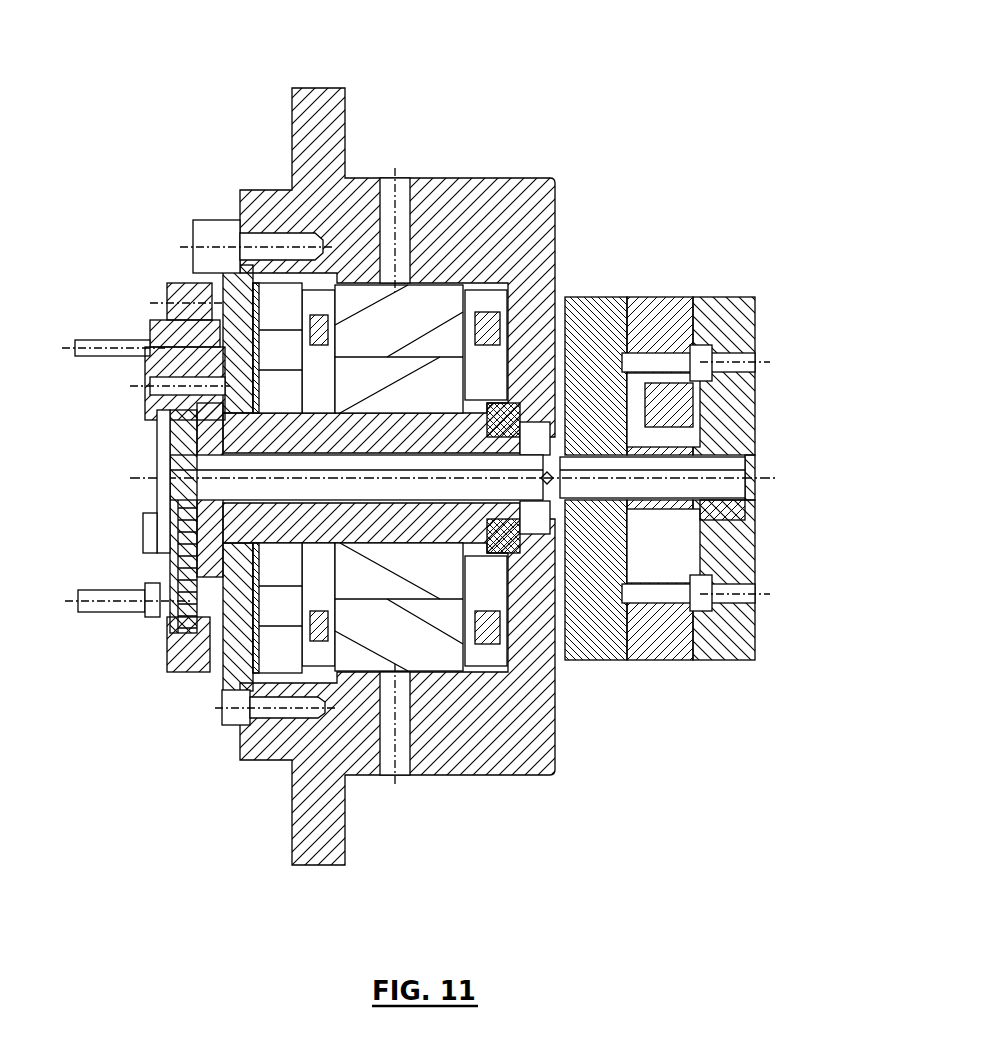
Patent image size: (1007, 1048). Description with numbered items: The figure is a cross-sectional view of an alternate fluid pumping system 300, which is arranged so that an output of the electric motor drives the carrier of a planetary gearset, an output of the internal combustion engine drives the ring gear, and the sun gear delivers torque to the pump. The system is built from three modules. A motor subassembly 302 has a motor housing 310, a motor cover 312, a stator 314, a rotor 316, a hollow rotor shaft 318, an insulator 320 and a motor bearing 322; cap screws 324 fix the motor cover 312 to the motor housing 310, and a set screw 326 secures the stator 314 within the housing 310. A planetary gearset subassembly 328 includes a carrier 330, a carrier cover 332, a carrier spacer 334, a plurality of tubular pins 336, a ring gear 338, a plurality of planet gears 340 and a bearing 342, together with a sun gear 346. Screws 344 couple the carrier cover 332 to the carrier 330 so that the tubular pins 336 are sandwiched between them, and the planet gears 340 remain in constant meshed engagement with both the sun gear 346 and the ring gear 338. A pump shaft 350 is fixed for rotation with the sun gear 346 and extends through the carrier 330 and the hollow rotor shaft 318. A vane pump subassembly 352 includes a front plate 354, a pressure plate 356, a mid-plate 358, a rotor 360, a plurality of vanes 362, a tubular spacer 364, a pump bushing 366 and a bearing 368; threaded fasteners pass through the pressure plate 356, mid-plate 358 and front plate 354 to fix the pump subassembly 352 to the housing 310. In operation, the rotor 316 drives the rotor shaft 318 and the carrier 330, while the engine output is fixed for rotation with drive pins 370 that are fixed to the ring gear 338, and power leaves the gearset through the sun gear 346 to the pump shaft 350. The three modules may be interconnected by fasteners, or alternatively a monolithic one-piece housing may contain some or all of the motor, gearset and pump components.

The fluid pumping system 300 is at (703, 108).
The motor subassembly 302 is at (334, 70).
The motor housing 310 is at (475, 713).
The motor cover 312 is at (240, 282).
The stator 314 is at (358, 648).
The rotor 316 is at (453, 570).
The hollow rotor shaft 318 is at (388, 425).
The insulator 320 is at (253, 680).
The motor bearing 322 is at (503, 427).
The cap screws 324 is at (202, 253).
The set screw 326 is at (395, 240).
The planetary gearset subassembly 328 is at (183, 698).
The carrier 330 is at (220, 437).
The carrier cover 332 is at (175, 562).
The carrier spacer 334 is at (202, 327).
The tubular pins 336 is at (162, 370).
The ring gear 338 is at (203, 650).
The planet gears 340 is at (188, 342).
The bearing 342 is at (183, 417).
The screws 344 is at (140, 385).
The sun gear 346 is at (188, 507).
The pump shaft 350 is at (723, 467).
The vane pump subassembly 352 is at (712, 443).
The front plate 354 is at (595, 330).
The pressure plate 356 is at (722, 330).
The mid-plate 358 is at (668, 330).
The rotor 360 is at (663, 440).
The vanes 362 is at (668, 410).
The tubular spacer 364 is at (682, 507).
The pump bushing 366 is at (725, 507).
The bearing 368 is at (588, 520).
The drive pins 370 is at (103, 610).